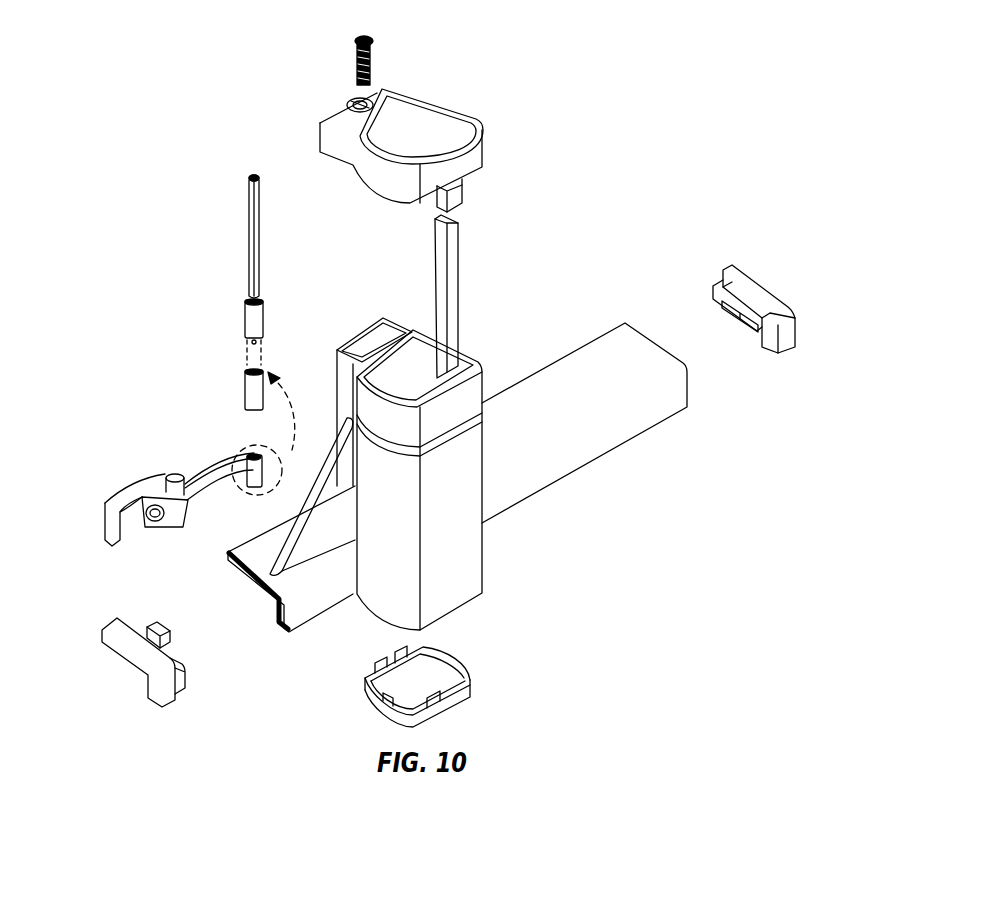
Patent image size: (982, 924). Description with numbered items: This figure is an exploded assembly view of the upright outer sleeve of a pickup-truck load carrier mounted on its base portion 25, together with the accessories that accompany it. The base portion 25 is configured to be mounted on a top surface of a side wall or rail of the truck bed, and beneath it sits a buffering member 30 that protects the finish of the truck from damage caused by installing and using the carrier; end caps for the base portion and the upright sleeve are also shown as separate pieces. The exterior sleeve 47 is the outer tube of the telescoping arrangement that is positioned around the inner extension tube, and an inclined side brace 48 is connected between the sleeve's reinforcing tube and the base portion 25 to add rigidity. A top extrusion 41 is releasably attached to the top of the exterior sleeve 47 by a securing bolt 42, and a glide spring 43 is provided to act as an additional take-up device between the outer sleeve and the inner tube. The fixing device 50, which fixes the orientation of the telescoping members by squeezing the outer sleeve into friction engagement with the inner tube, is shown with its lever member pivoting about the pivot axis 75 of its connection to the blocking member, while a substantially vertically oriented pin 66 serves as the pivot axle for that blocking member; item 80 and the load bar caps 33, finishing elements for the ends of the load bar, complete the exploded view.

The base portion 25 is at (605, 443).
The buffering member 30 is at (138, 655).
The load bar caps 33 is at (478, 663).
The top extrusion 41 is at (467, 93).
The securing bolt 42 is at (378, 48).
The glide spring 43 is at (468, 293).
The exterior sleeve 47 is at (468, 545).
The inclined side brace 48 is at (305, 552).
The fixing device 50 is at (196, 394).
The pin 66 is at (253, 232).
The pivot axis 75 is at (176, 465).
The pin tip 80 is at (254, 168).